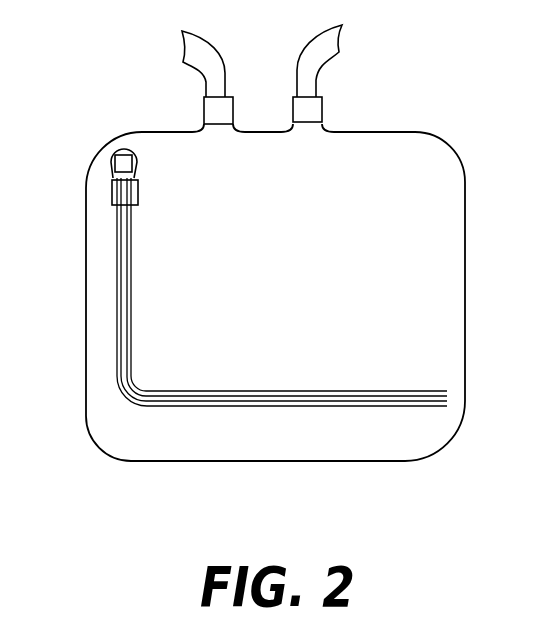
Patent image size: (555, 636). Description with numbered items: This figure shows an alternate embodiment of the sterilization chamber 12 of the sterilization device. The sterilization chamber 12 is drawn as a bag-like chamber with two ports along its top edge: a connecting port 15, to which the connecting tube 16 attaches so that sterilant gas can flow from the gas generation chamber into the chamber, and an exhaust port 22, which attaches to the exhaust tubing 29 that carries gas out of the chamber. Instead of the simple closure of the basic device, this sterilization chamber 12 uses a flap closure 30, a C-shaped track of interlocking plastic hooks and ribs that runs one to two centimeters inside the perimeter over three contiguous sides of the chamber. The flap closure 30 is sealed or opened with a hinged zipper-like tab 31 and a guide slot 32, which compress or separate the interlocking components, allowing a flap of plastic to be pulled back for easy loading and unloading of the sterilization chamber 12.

The sterilization chamber 12 is at (282, 244).
The connecting port 15 is at (293, 117).
The connecting tube 16 is at (318, 74).
The exhaust port 22 is at (204, 117).
The exhaust tubing 29 is at (206, 81).
The flap closure 30 is at (444, 402).
The hinged zipper-like tab 31 is at (108, 170).
The guide slot 32 is at (112, 198).